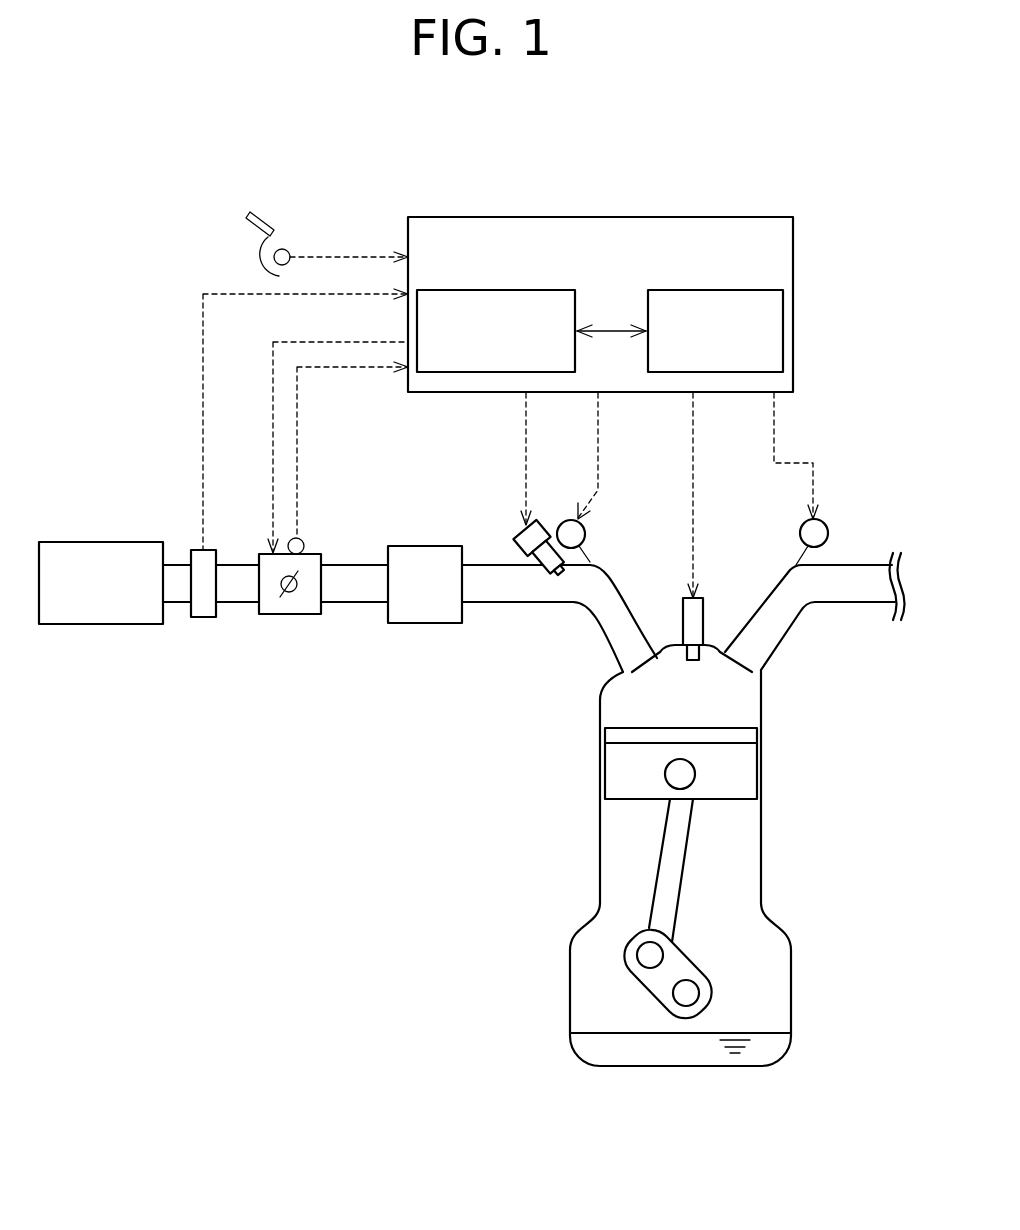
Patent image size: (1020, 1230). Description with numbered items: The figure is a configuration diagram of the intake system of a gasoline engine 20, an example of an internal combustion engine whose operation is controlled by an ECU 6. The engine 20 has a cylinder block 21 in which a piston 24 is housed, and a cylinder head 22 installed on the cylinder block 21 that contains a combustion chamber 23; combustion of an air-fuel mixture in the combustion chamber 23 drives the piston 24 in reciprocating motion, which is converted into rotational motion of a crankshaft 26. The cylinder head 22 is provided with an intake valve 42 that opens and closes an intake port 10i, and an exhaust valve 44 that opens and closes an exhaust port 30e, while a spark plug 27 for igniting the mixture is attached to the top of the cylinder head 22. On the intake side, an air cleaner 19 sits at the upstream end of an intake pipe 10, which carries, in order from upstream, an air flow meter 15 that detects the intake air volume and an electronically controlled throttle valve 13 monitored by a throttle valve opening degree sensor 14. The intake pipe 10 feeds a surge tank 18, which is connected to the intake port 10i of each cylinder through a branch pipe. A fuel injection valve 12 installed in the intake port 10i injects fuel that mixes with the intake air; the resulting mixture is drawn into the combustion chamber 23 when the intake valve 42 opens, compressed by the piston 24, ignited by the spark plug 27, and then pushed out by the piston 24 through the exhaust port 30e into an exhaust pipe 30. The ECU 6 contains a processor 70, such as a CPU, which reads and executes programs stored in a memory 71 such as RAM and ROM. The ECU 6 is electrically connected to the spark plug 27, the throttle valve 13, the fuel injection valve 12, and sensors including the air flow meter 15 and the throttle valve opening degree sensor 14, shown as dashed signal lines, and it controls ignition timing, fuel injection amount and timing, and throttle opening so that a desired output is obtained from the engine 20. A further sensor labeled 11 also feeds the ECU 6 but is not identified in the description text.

The ECU 6 is at (796, 224).
The processor 70 is at (533, 290).
The memory 71 is at (735, 290).
The accelerator pedal sensor 11 is at (291, 250).
The air cleaner 19 is at (100, 542).
The intake pipe 10 is at (375, 565).
The air flow meter 15 is at (201, 618).
The throttle valve 13 is at (298, 615).
The throttle valve opening degree sensor 14 is at (303, 540).
The surge tank 18 is at (413, 546).
The fuel injection valve 12 is at (547, 527).
The intake valve 42 is at (588, 549).
The intake port 10i is at (634, 620).
The spark plug 27 is at (704, 613).
The exhaust valve 44 is at (805, 549).
The exhaust pipe 30 is at (858, 565).
The exhaust port 30e is at (773, 633).
The engine 20 is at (555, 862).
The cylinder head 22 is at (762, 682).
The combustion chamber 23 is at (722, 710).
The piston 24 is at (743, 787).
The cylinder block 21 is at (593, 978).
The crankshaft 26 is at (686, 996).